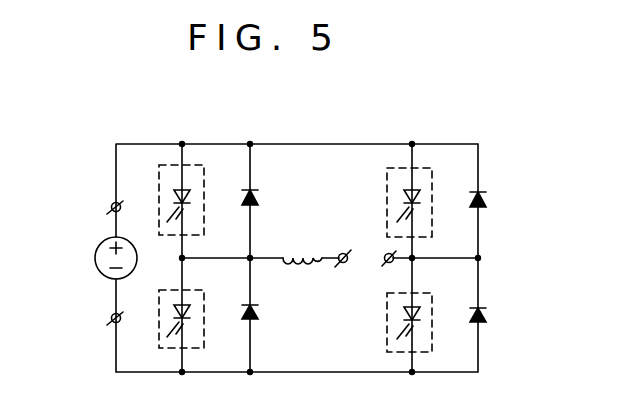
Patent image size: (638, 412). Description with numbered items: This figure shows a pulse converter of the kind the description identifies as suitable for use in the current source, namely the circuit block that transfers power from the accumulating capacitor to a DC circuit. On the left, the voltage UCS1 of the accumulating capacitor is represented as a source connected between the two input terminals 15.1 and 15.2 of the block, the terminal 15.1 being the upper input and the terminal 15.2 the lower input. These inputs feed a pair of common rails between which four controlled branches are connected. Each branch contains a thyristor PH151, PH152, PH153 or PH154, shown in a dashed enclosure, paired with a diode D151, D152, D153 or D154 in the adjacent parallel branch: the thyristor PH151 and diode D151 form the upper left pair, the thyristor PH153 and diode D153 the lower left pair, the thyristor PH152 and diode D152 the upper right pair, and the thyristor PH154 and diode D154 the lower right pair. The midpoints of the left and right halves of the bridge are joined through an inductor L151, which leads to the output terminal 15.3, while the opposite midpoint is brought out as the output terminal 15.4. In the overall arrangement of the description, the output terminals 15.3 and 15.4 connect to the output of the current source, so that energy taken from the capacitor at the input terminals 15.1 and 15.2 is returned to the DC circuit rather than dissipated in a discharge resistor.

The DC voltage source UCS1 is at (93, 263).
The input terminal 15.1 is at (110, 208).
The input terminal 15.2 is at (110, 318).
The output terminal 15.3 is at (348, 243).
The output terminal 15.4 is at (399, 268).
The inductor L151 is at (322, 241).
The thyristor PH151 is at (214, 164).
The thyristor PH152 is at (386, 182).
The thyristor PH153 is at (214, 286).
The thyristor PH154 is at (442, 287).
The diode D151 is at (257, 202).
The diode D152 is at (485, 205).
The diode D153 is at (258, 311).
The diode D154 is at (486, 316).